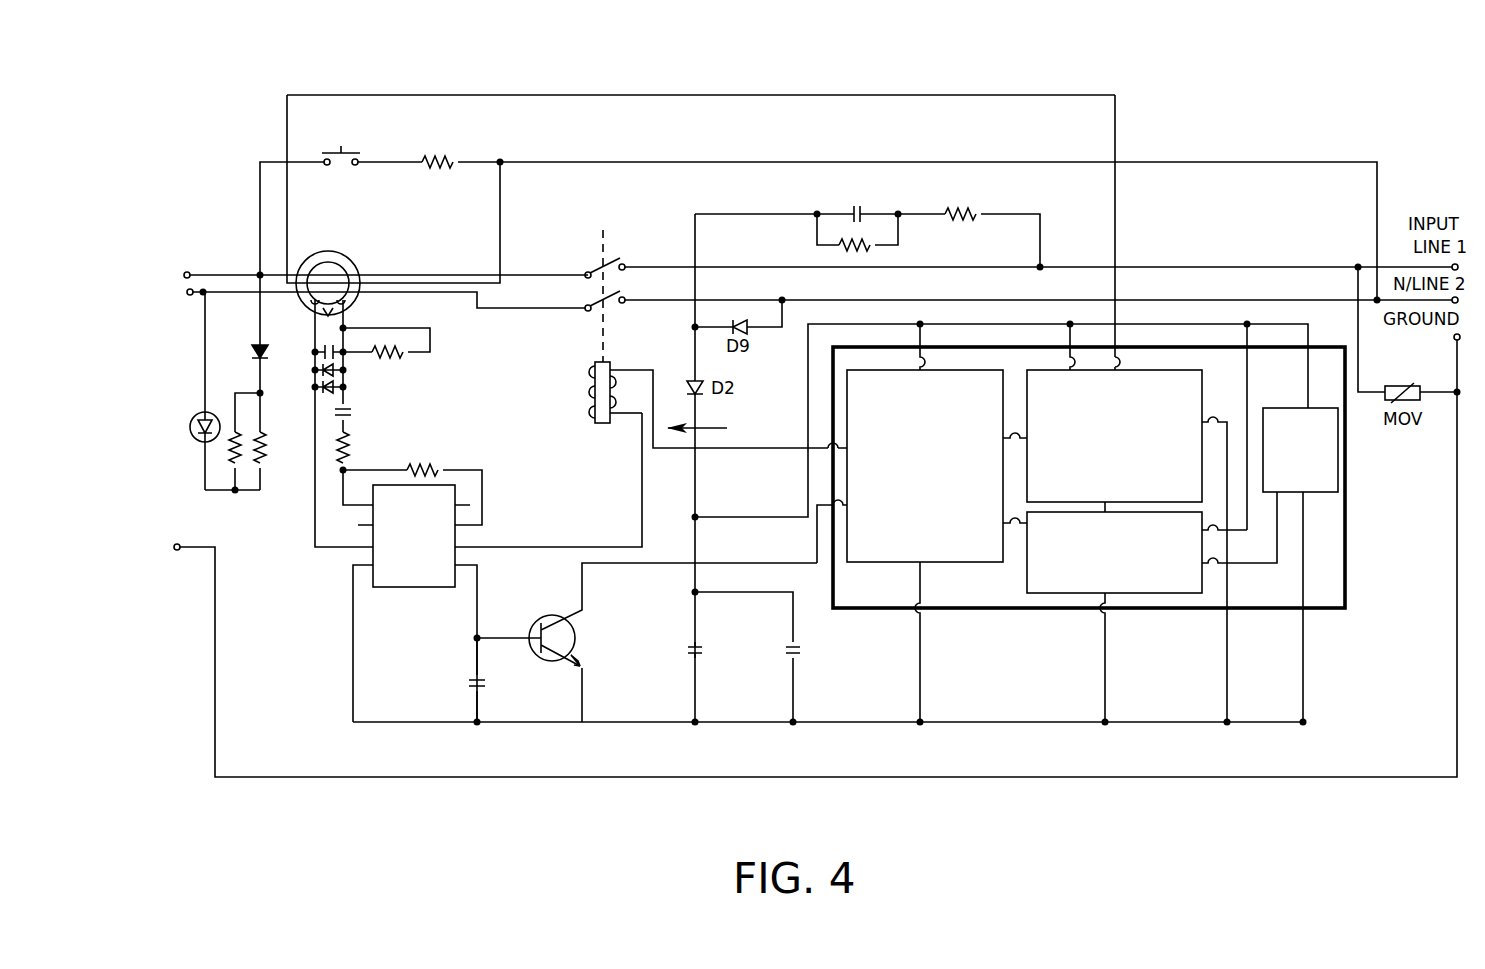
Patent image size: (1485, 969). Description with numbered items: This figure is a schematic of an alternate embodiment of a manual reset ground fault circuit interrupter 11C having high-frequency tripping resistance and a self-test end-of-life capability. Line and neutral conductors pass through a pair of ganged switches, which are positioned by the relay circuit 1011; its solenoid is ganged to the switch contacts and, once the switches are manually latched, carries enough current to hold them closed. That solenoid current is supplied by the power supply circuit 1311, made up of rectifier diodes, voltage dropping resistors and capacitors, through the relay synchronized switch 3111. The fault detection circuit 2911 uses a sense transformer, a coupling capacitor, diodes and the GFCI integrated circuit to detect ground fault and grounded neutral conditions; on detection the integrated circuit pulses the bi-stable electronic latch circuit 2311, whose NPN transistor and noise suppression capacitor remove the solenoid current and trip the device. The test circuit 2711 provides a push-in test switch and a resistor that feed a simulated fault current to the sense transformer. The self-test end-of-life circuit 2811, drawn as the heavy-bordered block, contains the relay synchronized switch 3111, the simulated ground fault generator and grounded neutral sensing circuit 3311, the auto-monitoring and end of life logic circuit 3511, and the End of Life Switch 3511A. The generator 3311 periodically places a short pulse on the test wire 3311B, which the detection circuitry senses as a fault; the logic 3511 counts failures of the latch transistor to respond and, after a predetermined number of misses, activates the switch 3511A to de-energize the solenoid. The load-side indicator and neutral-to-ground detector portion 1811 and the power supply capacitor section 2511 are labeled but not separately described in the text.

The manual reset ground fault circuit interrupter (GFCI) 11C is at (750, 88).
The test circuit 2711 is at (380, 120).
The test wire 3311B is at (1130, 123).
The load terminals / indicator circuit 1811 is at (186, 222).
The power supply circuit 1311 is at (1020, 191).
The relay circuit 1011 is at (578, 342).
The fault detection circuit 2911 is at (340, 620).
The bi-stable electronic latch circuit 2311 is at (527, 736).
The power supply capacitors 2511 is at (778, 740).
The self-test end-of-life (STEOL) circuit 2811 is at (1066, 523).
The relay synchronized switch 3111 is at (925, 466).
The simulated ground fault generator and grounded neutral sensing circuit 3311 is at (1114, 436).
The auto-monitoring and end of life logic circuit 3511 is at (1018, 579).
The End of Life Switch 3511A is at (1350, 467).